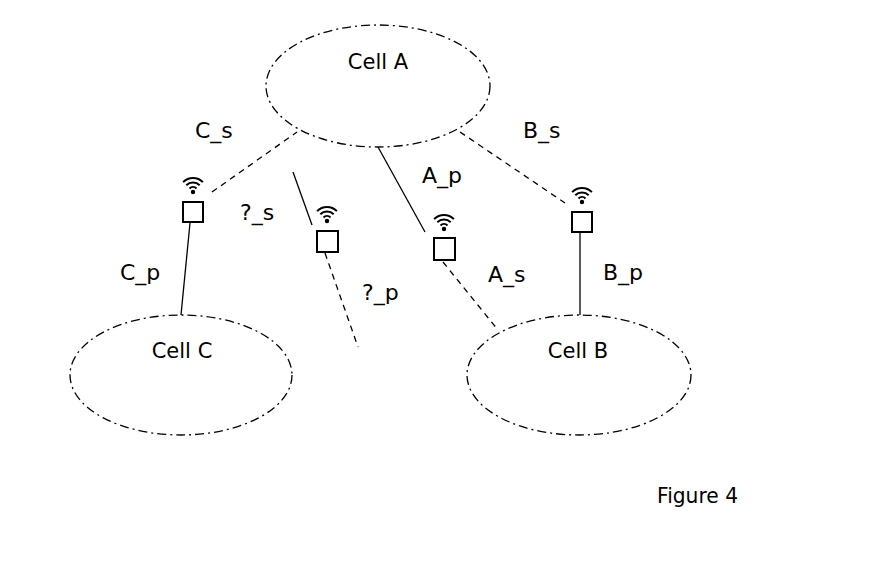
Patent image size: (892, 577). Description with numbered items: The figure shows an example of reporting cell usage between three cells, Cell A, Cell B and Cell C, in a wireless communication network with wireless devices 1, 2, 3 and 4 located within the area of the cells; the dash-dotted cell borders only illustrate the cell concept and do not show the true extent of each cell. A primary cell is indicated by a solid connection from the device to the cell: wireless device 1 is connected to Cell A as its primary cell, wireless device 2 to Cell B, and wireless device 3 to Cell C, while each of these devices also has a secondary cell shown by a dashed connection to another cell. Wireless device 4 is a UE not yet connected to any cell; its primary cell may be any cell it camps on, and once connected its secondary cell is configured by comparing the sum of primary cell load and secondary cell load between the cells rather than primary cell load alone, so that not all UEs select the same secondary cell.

The wireless device 1 is at (430, 238).
The wireless device 2 is at (598, 210).
The wireless device 3 is at (179, 202).
The wireless device 4 is at (313, 231).